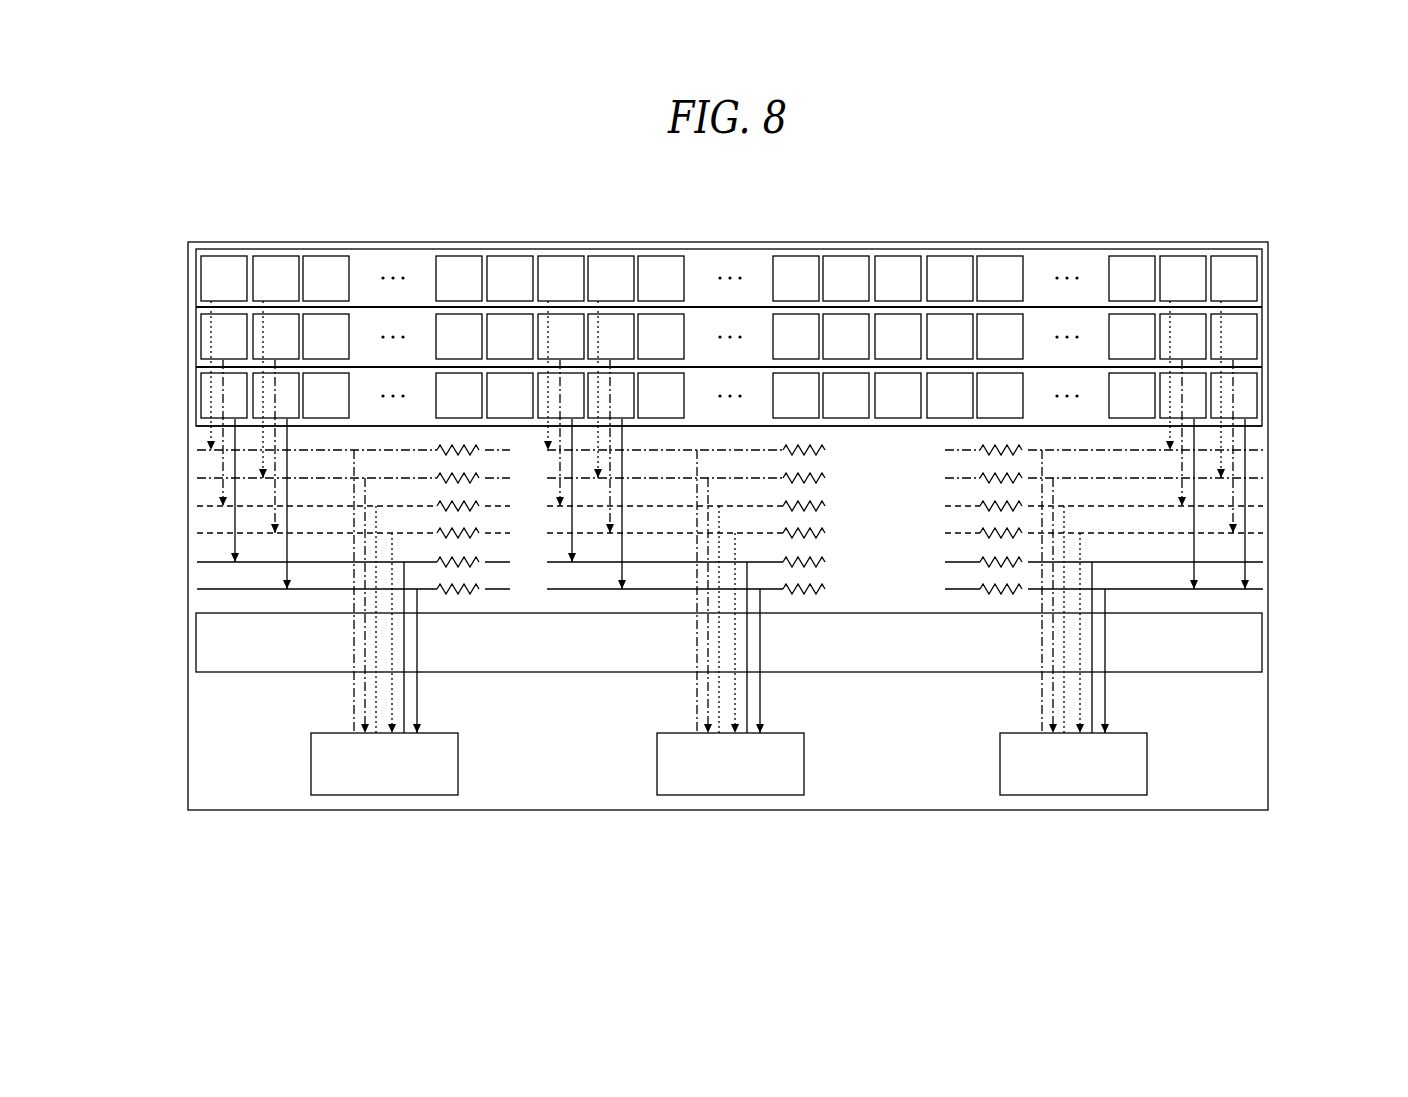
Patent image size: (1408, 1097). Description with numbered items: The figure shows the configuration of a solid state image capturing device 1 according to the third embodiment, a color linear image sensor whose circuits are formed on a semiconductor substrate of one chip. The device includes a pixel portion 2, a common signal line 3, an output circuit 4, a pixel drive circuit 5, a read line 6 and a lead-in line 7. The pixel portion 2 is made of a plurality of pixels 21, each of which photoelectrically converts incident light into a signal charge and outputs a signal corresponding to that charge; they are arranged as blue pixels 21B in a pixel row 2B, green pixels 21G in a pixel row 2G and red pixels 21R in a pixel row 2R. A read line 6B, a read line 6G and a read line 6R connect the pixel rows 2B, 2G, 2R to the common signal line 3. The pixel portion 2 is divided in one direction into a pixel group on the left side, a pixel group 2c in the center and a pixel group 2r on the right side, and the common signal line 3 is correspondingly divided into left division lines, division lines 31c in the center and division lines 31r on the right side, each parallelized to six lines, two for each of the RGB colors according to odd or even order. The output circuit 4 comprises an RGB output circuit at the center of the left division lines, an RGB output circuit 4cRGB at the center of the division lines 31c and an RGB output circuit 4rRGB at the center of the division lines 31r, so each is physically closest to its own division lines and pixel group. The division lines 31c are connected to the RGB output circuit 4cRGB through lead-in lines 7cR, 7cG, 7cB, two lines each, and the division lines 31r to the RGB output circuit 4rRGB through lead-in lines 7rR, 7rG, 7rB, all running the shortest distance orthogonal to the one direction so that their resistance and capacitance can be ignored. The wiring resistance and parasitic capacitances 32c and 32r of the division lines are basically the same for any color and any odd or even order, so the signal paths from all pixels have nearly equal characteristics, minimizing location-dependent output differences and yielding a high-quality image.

The solid state image capturing device 1 is at (1268, 243).
The pixel portion 2 is at (771, 289).
The pixel group in the center 2c is at (920, 242).
The pixel group on the right side 2r is at (1255, 242).
The pixel row 2B is at (1257, 279).
The pixel row 2G is at (1257, 337).
The pixel row 2R is at (759, 395).
The pixel 21 is at (430, 190).
The pixel of blue color 21B is at (328, 256).
The pixel of green color 21G is at (349, 337).
The pixel of red color 21R is at (349, 395).
The read line 6 is at (683, 361).
The read line 6B is at (196, 307).
The read line 6G is at (196, 367).
The read line 6R is at (699, 412).
The common signal line 3 is at (1353, 427).
The division lines in the center 31c is at (751, 459).
The division lines on the right side 31r is at (1164, 451).
The wiring resistance and parasitic capacitances 32c is at (776, 437).
The wiring resistance and parasitic capacitances 32r is at (973, 437).
The pixel drive circuit 5 is at (1263, 637).
The lead-in line 7 is at (1197, 738).
The lead-in line 7cB is at (652, 591).
The lead-in line 7cG is at (666, 621).
The lead-in line 7cR is at (794, 647).
The lead-in line 7rB is at (997, 591).
The lead-in line 7rG is at (1011, 621).
The lead-in line 7rR is at (1137, 647).
The output circuit 4 is at (729, 815).
The RGB output circuit 4cRGB is at (730, 796).
The RGB output circuit 4rRGB is at (1073, 794).